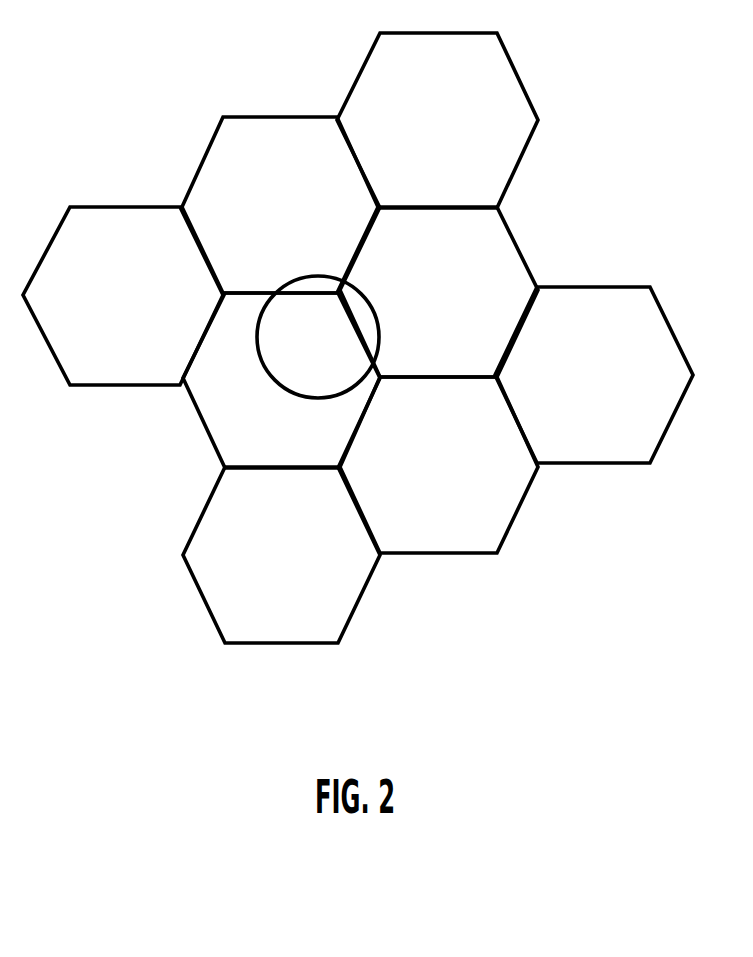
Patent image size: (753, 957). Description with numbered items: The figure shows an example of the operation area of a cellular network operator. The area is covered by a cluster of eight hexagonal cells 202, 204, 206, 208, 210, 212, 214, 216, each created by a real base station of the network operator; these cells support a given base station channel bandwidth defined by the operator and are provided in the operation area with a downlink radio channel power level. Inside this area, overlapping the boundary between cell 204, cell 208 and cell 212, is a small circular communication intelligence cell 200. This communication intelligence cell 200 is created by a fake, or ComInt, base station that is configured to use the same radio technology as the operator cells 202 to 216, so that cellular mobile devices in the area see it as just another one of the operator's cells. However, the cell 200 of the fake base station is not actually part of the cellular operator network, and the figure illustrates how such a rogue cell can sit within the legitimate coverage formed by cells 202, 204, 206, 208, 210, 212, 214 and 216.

The communication intelligence cell 200 is at (327, 360).
The cell 202 is at (450, 132).
The cell 204 is at (296, 219).
The cell 206 is at (144, 301).
The cell 208 is at (452, 304).
The cell 210 is at (616, 391).
The cell 212 is at (289, 421).
The cell 214 is at (454, 483).
The cell 216 is at (311, 562).